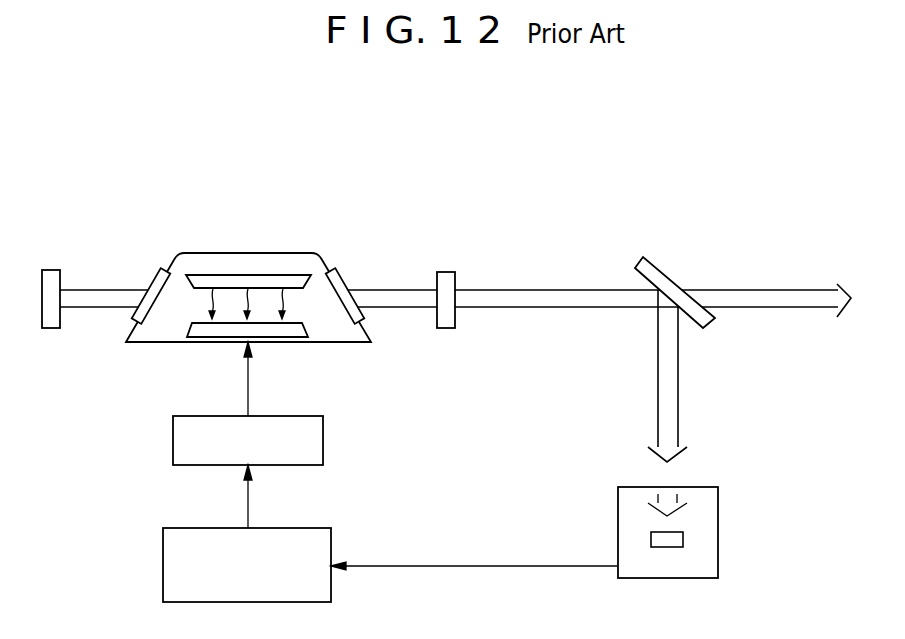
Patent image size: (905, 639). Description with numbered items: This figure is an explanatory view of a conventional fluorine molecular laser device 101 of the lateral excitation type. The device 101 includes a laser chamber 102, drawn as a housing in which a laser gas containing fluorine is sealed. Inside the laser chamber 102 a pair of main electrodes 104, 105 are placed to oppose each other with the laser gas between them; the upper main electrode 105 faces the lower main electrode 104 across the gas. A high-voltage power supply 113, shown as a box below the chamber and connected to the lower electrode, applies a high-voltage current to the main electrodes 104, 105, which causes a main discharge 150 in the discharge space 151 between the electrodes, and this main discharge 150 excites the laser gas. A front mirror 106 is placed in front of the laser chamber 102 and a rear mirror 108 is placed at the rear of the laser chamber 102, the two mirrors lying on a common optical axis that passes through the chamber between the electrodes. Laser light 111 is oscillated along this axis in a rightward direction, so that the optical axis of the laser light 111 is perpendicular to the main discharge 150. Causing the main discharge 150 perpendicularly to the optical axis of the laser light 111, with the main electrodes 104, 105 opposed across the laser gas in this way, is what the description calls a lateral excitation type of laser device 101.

The fluorine molecular laser device 101 is at (250, 267).
The laser chamber 102 is at (251, 253).
The main electrode 104 is at (215, 338).
The main electrode 105 is at (211, 272).
The front mirror 106 is at (445, 270).
The rear mirror 108 is at (52, 268).
The laser light 111 is at (763, 288).
The high-voltage power supply 113 is at (173, 437).
The main discharge 150 is at (250, 300).
The discharge space 151 is at (292, 304).